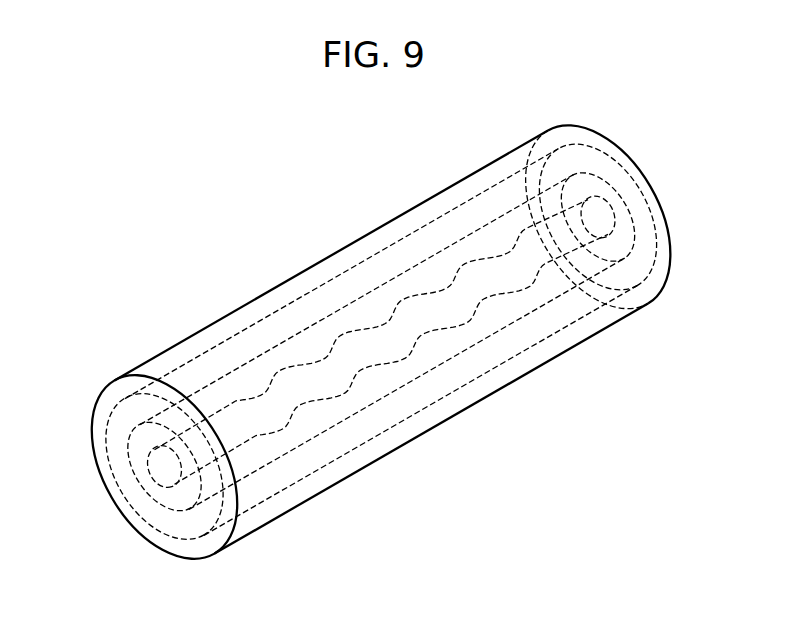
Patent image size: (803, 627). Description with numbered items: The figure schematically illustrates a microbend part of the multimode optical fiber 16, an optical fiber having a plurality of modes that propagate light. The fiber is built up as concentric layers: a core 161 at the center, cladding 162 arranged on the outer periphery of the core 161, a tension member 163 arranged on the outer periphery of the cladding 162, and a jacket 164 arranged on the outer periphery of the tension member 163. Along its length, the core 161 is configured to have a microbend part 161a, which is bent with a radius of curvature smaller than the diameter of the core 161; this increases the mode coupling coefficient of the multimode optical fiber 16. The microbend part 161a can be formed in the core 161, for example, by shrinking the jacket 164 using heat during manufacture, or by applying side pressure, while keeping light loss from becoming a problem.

The multimode optical fiber 16 is at (629, 153).
The core 161 is at (153, 467).
The microbend part 161a is at (352, 326).
The cladding 162 is at (147, 440).
The tension member 163 is at (147, 500).
The jacket 164 is at (147, 524).